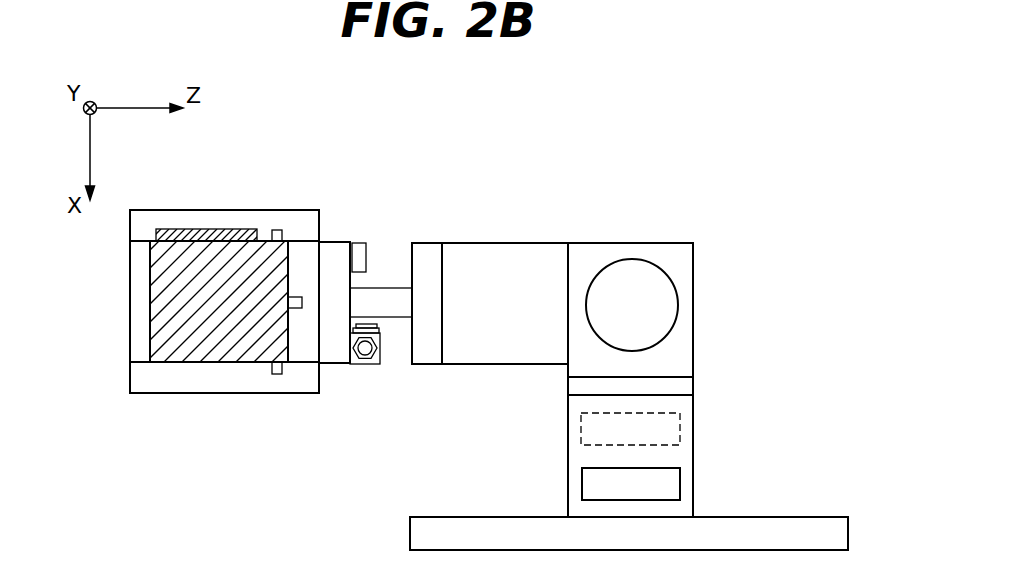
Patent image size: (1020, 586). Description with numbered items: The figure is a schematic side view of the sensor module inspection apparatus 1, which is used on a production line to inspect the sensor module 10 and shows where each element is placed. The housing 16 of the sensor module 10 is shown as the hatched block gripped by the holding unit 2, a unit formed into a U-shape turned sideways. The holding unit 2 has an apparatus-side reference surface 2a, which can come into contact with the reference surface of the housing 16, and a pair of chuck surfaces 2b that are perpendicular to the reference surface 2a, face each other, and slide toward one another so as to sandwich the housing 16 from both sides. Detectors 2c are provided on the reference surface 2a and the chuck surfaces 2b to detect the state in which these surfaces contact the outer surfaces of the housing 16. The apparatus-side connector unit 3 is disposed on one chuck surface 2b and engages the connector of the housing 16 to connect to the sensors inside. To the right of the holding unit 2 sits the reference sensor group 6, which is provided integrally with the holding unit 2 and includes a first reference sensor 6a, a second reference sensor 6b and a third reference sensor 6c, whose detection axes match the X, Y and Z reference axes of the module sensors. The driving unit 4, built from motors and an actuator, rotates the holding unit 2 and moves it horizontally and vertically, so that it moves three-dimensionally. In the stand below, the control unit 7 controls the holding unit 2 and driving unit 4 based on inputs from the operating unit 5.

The sensor module inspection apparatus 1 is at (609, 110).
The holding unit 2 is at (113, 450).
The apparatus-side reference surface 2a is at (282, 317).
The chuck surface 2b is at (203, 246).
The detector 2c is at (260, 249).
The apparatus-side connector unit 3 is at (238, 240).
The driving unit 4 is at (592, 385).
The operating unit 5 is at (680, 483).
The reference sensor group 6 is at (409, 223).
The first reference sensor 6a is at (366, 325).
The second reference sensor 6b is at (435, 270).
The third reference sensor 6c is at (360, 243).
The control unit 7 is at (680, 428).
The sensor module 10 is at (157, 338).
The housing 16 is at (149, 283).